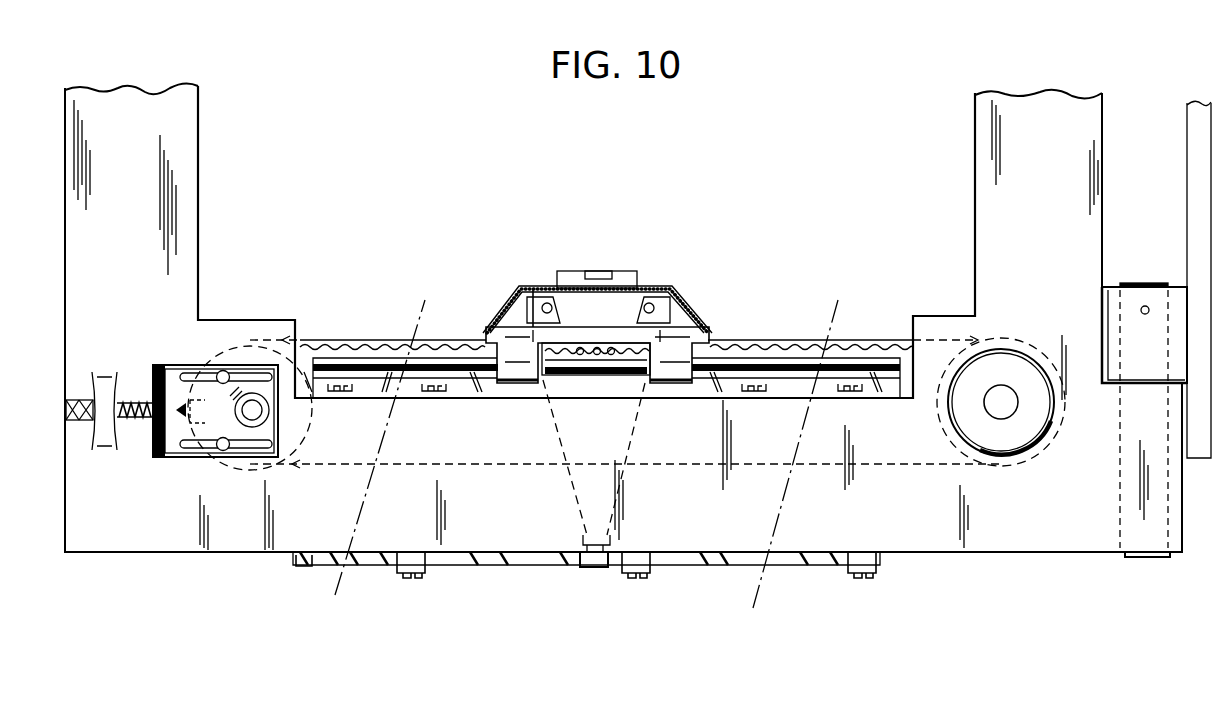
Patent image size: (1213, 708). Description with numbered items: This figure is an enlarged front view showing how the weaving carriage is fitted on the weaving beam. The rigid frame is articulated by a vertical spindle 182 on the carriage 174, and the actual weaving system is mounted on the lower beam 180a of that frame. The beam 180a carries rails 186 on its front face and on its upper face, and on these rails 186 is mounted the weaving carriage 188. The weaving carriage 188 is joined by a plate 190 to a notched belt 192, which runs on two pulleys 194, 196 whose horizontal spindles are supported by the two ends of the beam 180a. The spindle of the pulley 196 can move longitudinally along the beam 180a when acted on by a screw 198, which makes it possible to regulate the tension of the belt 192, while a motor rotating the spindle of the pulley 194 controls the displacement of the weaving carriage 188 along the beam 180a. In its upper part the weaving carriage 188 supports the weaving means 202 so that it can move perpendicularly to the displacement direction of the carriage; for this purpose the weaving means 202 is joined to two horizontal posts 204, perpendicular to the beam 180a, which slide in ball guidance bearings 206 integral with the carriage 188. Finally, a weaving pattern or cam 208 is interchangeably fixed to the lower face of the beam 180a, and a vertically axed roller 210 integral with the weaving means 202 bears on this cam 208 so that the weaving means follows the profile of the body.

The carriage 174 is at (1196, 150).
The lower beam 180a is at (940, 527).
The vertical spindle 182 is at (1147, 557).
The rails 186 is at (880, 360).
The weaving carriage 188 is at (507, 400).
The plate 190 is at (582, 400).
The notched belt 192 is at (765, 345).
The pulley 194 is at (1010, 358).
The pulley 196 is at (315, 348).
The screw 198 is at (136, 420).
The weaving means 202 is at (625, 275).
The horizontal posts 204 is at (537, 318).
The ball guidance bearings 206 is at (524, 324).
The weaving pattern or cam 208 is at (305, 565).
The vertically axed roller 210 is at (582, 567).